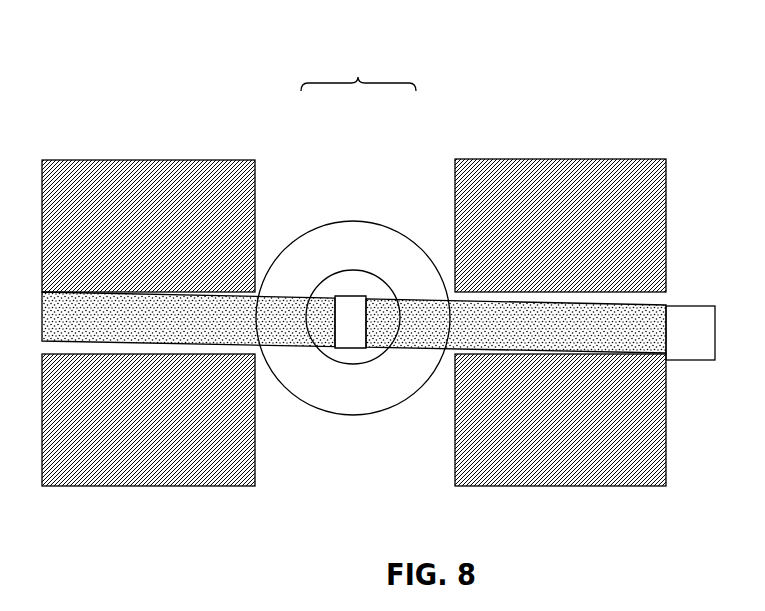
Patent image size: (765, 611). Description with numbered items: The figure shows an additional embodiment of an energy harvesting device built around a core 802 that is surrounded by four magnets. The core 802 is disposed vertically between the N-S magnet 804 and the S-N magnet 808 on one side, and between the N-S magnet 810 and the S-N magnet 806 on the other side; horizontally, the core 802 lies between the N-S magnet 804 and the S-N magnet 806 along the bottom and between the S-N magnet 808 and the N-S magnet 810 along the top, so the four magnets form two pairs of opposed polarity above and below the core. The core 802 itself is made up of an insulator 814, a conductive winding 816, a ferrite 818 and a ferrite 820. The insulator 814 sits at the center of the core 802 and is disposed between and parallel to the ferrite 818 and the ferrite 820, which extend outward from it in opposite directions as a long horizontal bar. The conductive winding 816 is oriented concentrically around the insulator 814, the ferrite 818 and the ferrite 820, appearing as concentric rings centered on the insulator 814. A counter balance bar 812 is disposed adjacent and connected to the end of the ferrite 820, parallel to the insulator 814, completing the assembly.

The core 802 is at (358, 66).
The N-S magnet 804 is at (106, 453).
The S-N magnet 806 is at (523, 457).
The S-N magnet 808 is at (106, 200).
The N-S magnet 810 is at (523, 203).
The counter balance bar 812 is at (686, 308).
The insulator 814 is at (343, 298).
The conductive winding 816 is at (377, 228).
The ferrite 818 is at (112, 328).
The ferrite 820 is at (582, 331).